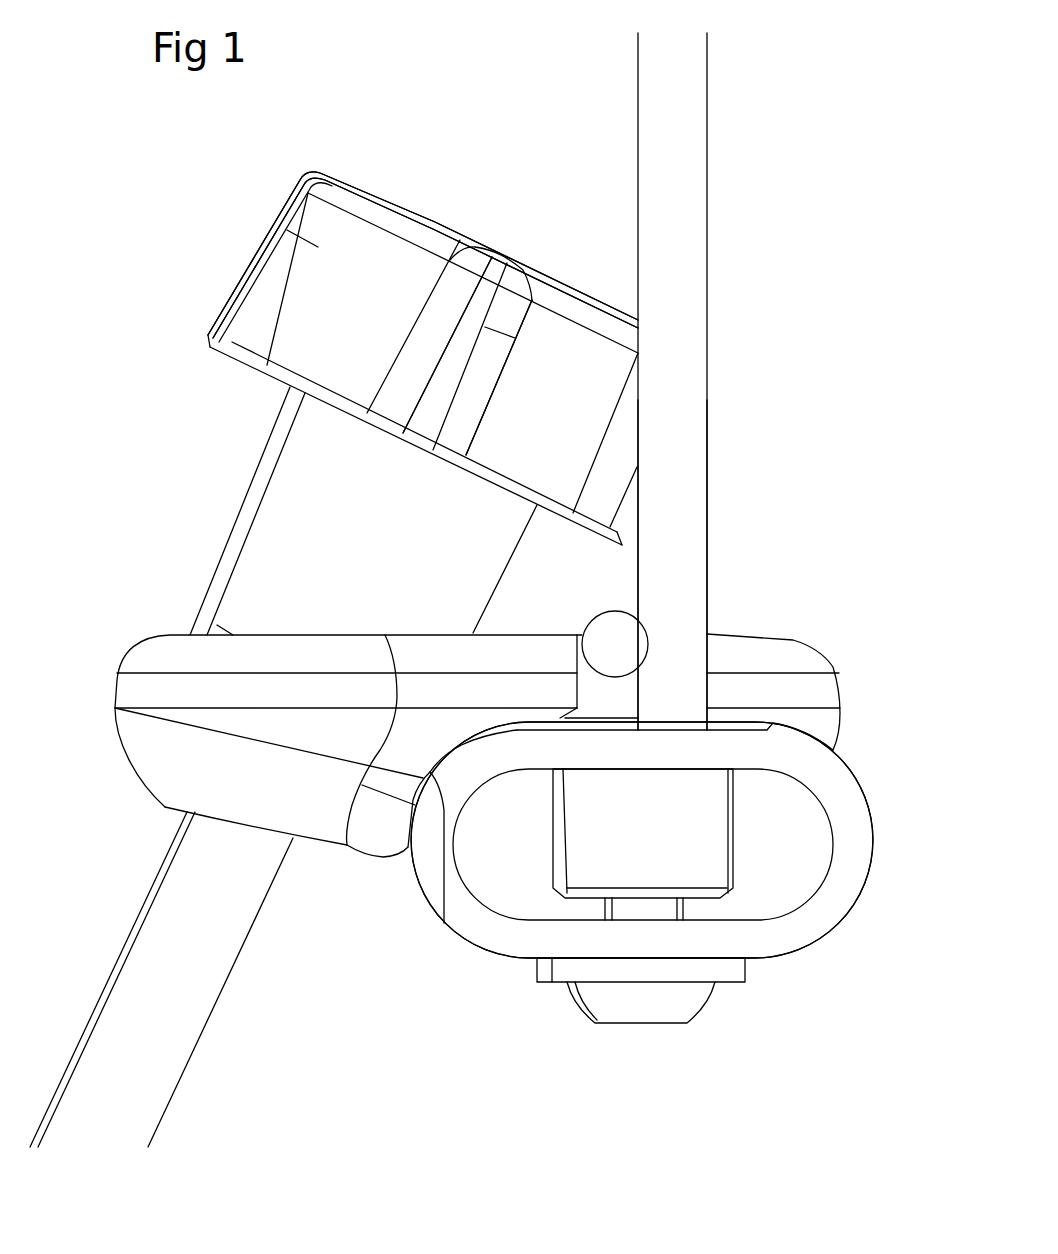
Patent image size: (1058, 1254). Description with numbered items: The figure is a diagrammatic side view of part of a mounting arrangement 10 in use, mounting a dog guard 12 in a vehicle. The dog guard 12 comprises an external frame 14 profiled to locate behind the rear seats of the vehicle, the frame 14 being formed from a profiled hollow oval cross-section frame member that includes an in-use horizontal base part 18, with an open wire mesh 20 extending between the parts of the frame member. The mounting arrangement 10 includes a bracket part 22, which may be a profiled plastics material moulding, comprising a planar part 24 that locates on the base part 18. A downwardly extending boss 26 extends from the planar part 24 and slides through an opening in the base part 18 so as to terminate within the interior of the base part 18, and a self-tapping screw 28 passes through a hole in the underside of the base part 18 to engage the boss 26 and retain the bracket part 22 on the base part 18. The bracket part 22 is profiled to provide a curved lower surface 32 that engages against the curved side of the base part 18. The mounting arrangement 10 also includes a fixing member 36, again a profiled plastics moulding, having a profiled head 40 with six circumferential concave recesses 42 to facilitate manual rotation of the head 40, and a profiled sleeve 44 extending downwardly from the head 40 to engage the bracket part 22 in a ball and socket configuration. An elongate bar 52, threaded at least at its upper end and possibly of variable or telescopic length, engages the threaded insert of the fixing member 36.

The mounting arrangement 10 is at (362, 875).
The dog guard 12 is at (667, 225).
The external frame 14 is at (800, 927).
The base part 18 is at (840, 892).
The open wire mesh 20 is at (687, 527).
The bracket part 22 is at (330, 852).
The planar part 24 is at (772, 662).
The boss 26 is at (697, 818).
The self-tapping screw 28 is at (628, 1000).
The curved lower surface 32 is at (444, 923).
The fixing member 36 is at (425, 192).
The profiled head 40 is at (343, 273).
The concave recesses 42 is at (420, 262).
The sleeve 44 is at (300, 487).
The bar 52 is at (155, 1055).